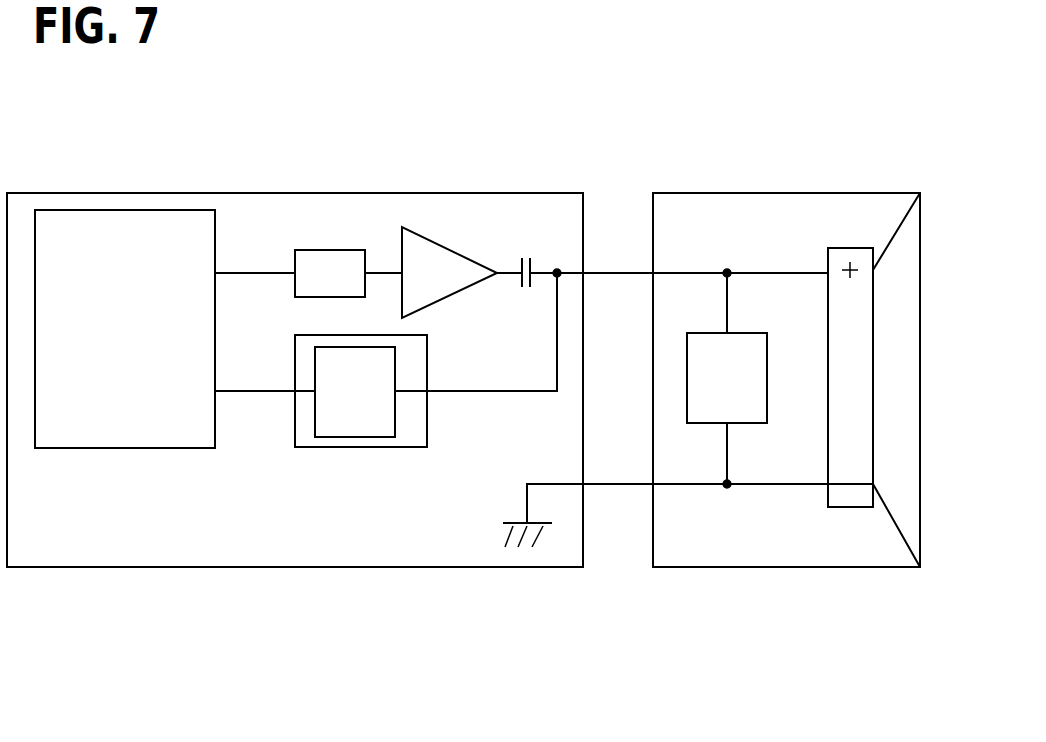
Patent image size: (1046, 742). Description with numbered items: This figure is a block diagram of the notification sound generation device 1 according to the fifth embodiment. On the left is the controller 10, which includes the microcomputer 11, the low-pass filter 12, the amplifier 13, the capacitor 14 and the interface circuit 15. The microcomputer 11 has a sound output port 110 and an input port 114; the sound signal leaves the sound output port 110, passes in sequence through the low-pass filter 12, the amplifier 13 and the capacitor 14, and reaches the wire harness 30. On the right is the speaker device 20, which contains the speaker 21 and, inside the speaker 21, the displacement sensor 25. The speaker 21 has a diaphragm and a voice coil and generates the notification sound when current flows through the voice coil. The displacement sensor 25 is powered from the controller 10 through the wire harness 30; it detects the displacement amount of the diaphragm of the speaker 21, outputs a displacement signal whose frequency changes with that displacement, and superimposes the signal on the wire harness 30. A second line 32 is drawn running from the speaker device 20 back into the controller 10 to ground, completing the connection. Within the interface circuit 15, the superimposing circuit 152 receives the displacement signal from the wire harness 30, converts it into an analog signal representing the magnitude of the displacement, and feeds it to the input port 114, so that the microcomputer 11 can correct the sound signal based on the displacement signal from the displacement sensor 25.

The notification sound generation device 1 is at (500, 140).
The controller 10 is at (28, 193).
The microcomputer 11 is at (188, 210).
The sound output port 110 is at (217, 271).
The input port 114 is at (217, 389).
The low-pass filter 12 is at (317, 250).
The amplifier 13 is at (452, 252).
The capacitor 14 is at (537, 257).
The interface circuit 15 is at (407, 448).
The superimposing circuit 152 is at (325, 437).
The wire harness 30 is at (622, 272).
The ground/negative line 32 is at (620, 484).
The speaker device 20 is at (843, 192).
The speaker 21 is at (894, 235).
The displacement sensor 25 is at (707, 423).